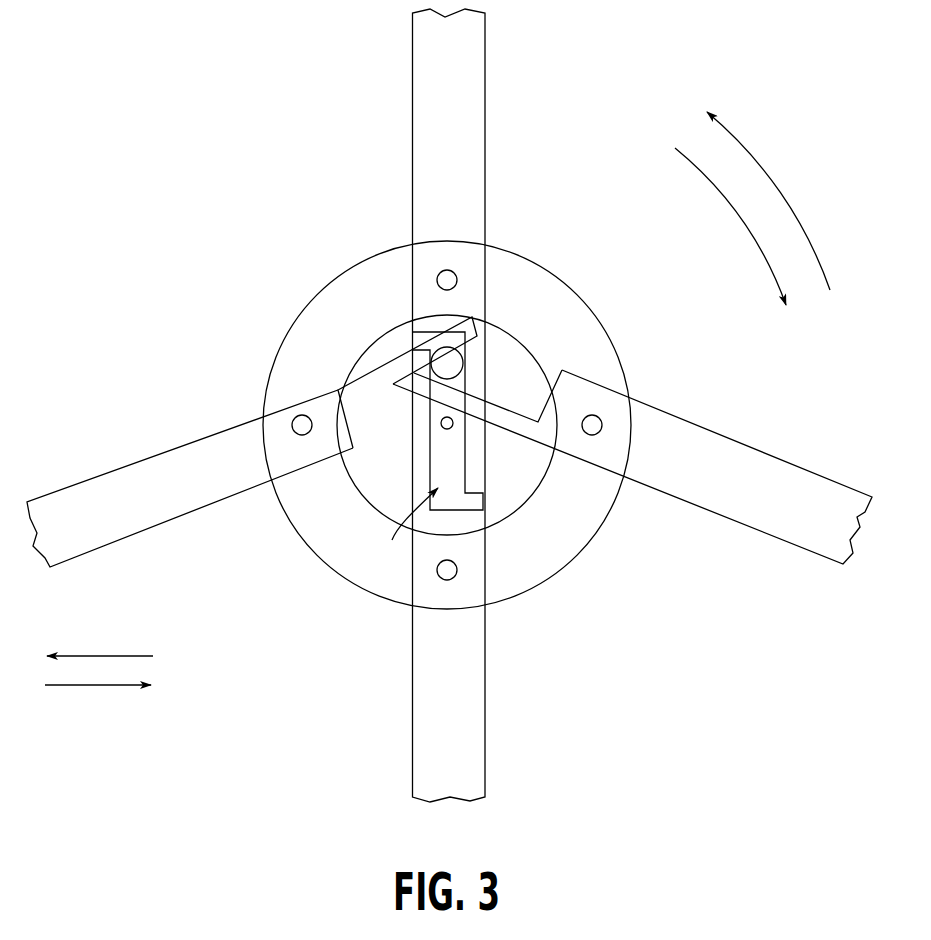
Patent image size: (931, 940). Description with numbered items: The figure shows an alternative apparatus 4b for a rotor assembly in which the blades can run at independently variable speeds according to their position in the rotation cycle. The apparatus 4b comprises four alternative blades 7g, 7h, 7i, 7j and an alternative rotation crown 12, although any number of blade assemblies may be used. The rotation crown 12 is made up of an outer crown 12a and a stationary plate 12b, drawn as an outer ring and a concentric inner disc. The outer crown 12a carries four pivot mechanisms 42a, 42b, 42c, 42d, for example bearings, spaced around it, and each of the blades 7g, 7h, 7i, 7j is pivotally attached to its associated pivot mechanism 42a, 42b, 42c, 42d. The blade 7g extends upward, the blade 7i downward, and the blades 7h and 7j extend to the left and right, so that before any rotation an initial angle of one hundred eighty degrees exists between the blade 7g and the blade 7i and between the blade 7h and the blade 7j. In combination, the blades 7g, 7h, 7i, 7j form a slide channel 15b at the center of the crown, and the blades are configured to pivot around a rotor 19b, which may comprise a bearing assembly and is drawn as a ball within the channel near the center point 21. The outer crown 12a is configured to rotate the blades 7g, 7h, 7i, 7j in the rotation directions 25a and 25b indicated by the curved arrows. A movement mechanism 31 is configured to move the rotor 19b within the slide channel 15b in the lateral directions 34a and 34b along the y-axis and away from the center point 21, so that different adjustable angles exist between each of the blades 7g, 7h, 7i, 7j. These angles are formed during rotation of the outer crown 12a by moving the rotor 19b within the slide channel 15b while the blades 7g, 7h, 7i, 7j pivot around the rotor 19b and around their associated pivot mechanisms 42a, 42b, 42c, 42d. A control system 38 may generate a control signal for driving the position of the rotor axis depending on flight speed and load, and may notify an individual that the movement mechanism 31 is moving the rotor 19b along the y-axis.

The apparatus 4b is at (205, 171).
The blade 7g is at (412, 92).
The blade 7h is at (105, 472).
The blade 7i is at (412, 706).
The blade 7j is at (805, 468).
The rotation crown 12 is at (327, 596).
The outer crown 12a is at (322, 533).
The stationary plate 12b is at (357, 472).
The slide channel 15b is at (404, 527).
The rotor 19b is at (444, 354).
The center point 21 is at (443, 429).
The direction 25a is at (785, 198).
The direction 25b is at (745, 227).
The movement mechanism 31 is at (447, 445).
The lateral direction 34a is at (98, 687).
The lateral direction 34b is at (97, 655).
The control system 38 is at (482, 503).
The pivot mechanism 42a is at (455, 273).
The pivot mechanism 42b is at (298, 415).
The pivot mechanism 42c is at (447, 581).
The pivot mechanism 42d is at (600, 418).